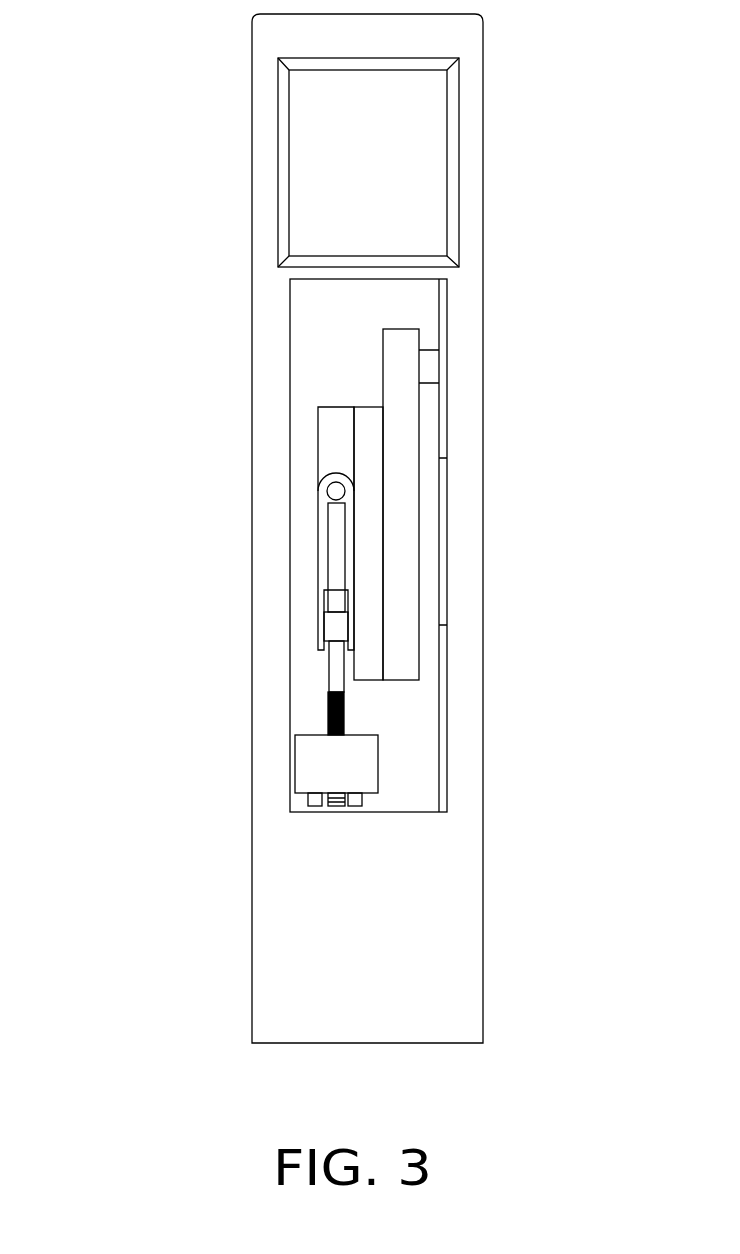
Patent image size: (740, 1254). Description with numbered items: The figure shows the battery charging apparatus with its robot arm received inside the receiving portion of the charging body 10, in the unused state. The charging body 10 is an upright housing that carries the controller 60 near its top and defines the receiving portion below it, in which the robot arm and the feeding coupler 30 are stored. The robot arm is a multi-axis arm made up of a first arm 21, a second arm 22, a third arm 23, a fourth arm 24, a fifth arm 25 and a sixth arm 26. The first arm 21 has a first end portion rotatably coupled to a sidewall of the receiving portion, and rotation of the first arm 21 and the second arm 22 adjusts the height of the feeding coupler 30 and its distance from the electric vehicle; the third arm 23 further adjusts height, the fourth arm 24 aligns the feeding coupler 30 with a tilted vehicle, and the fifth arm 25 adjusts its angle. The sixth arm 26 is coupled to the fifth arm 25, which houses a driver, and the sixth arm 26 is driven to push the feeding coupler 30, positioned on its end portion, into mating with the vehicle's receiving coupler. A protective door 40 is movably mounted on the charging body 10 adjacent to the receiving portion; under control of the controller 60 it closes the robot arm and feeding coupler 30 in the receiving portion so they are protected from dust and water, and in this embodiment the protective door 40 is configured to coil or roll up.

The charging body 10 is at (267, 333).
The controller 60 is at (335, 141).
The protective door 40 is at (442, 515).
The first arm 21 is at (400, 385).
The second arm 22 is at (375, 425).
The third arm 23 is at (335, 440).
The fourth arm 24 is at (322, 518).
The fifth arm 25 is at (340, 623).
The sixth arm 26 is at (332, 663).
The feeding coupler 30 is at (315, 758).